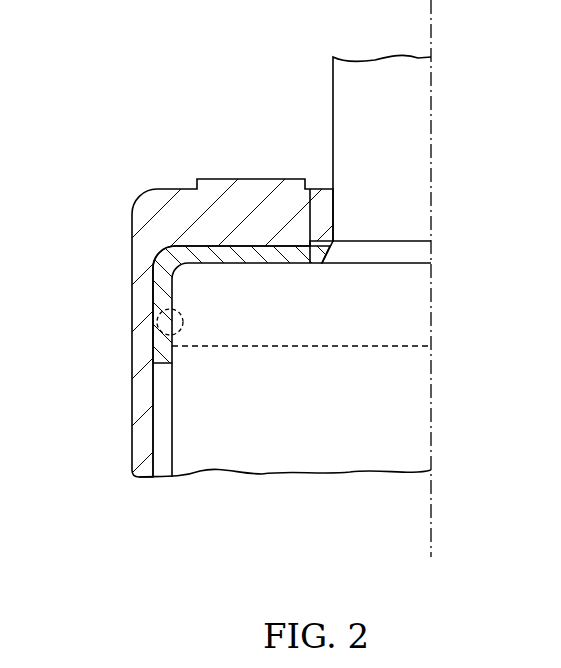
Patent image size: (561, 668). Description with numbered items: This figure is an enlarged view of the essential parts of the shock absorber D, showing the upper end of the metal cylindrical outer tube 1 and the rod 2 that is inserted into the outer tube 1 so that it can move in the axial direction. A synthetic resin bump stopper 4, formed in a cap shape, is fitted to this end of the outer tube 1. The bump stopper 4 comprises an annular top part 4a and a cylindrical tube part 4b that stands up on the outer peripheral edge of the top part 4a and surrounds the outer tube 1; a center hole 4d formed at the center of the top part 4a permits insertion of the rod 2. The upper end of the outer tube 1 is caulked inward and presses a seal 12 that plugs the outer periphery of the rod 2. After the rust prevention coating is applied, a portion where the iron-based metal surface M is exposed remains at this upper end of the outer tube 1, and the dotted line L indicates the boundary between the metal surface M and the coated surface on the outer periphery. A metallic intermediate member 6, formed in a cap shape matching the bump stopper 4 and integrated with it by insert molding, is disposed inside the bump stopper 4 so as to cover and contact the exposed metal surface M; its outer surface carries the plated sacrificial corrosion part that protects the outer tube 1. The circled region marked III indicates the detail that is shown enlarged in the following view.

The outer tube 1 is at (263, 463).
The rod 2 is at (333, 107).
The bump stopper 4 is at (130, 397).
The top part 4a is at (218, 212).
The tube part 4b is at (142, 352).
The center hole 4d is at (321, 200).
The intermediate member 6 is at (243, 246).
The seal 12 is at (396, 248).
The shock absorber D is at (129, 194).
The metal surface M is at (400, 320).
The dotted line L is at (308, 348).
The section III is at (156, 323).